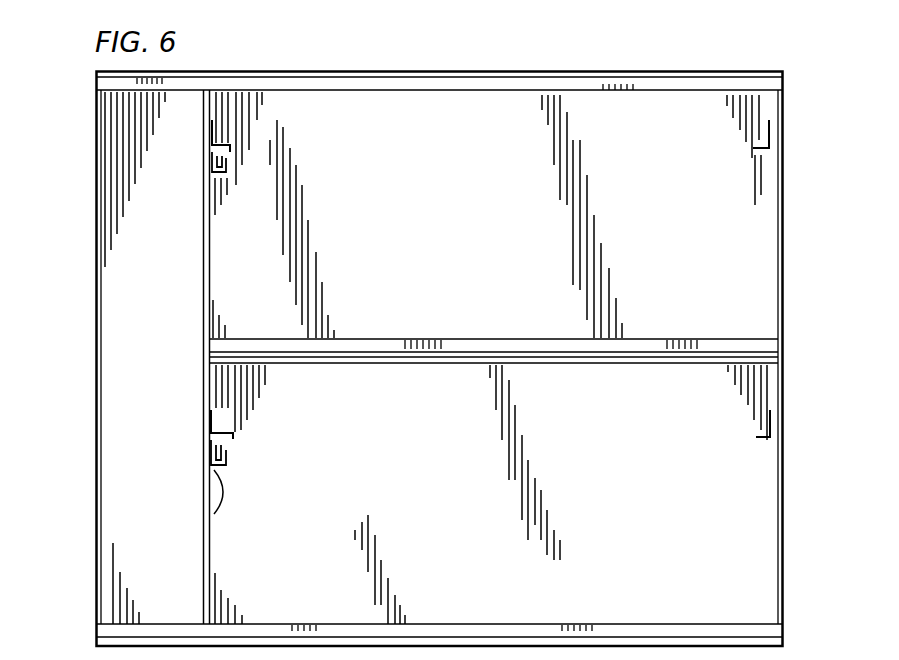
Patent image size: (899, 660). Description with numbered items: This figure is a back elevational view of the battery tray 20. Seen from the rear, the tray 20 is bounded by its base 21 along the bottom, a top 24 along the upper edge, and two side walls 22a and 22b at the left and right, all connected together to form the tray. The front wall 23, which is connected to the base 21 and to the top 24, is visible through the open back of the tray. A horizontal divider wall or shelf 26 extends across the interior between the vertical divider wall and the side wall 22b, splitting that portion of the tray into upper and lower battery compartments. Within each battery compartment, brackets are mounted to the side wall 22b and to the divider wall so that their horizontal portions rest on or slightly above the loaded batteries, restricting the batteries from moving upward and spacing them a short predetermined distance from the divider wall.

The battery tray 20 is at (751, 46).
The base 21 is at (480, 624).
The side wall 22a is at (96, 330).
The side wall 22b is at (784, 300).
The front wall 23 is at (471, 229).
The top 24 is at (561, 72).
The horizontal divider wall or shelf 26 is at (503, 339).